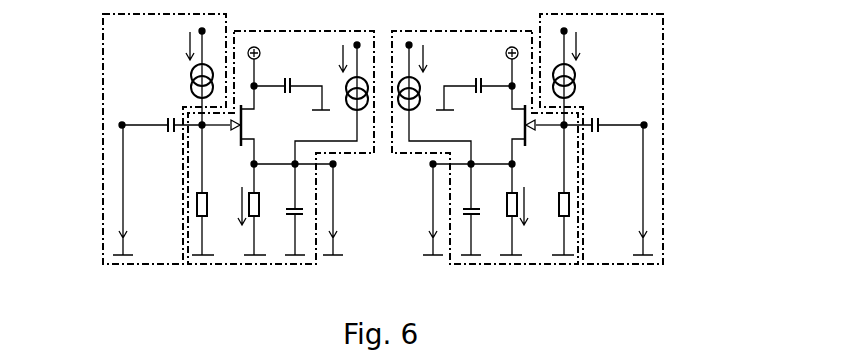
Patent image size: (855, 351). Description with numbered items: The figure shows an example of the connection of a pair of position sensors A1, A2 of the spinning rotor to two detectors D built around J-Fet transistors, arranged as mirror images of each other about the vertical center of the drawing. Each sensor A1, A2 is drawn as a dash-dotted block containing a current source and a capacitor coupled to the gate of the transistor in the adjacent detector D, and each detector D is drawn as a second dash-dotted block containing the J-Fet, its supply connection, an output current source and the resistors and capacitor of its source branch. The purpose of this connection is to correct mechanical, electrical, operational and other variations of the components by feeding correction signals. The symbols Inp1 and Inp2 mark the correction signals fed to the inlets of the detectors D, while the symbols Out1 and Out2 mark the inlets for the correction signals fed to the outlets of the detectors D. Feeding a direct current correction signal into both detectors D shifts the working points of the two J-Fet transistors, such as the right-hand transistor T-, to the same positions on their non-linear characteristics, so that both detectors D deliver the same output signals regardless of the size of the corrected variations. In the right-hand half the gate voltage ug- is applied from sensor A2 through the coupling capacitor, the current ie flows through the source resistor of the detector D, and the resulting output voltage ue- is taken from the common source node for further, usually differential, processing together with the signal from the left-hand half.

The sensor A1 is at (108, 86).
The sensor A2 is at (658, 86).
The detector D is at (232, 252).
The correction signal Inp1 is at (184, 76).
The correction signal Inp2 is at (584, 76).
The inlet for correction signal Out1 is at (331, 103).
The inlet for correction signal Out2 is at (434, 103).
The negative transistor T- is at (528, 125).
The negative gate voltage ug- is at (607, 186).
The negative emitter voltage ue- is at (421, 209).
The emitter current ie is at (384, 203).